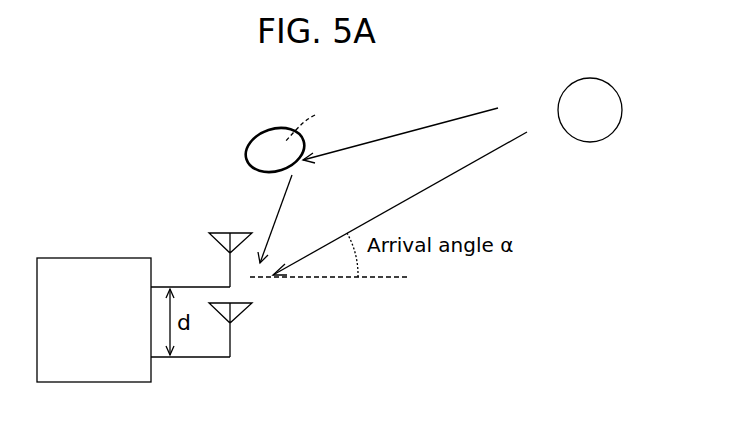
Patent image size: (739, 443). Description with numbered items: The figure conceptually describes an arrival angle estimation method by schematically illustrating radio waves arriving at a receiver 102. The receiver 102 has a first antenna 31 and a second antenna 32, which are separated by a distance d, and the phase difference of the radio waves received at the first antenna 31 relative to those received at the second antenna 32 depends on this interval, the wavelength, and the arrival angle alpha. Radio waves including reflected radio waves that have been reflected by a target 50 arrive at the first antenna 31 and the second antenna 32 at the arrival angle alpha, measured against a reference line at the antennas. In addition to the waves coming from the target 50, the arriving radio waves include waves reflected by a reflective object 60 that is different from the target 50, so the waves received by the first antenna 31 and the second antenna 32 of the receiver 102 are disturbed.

The receiver 102 is at (89, 255).
The first antenna 31 is at (200, 285).
The second antenna 32 is at (197, 358).
The reflective object 60 is at (255, 137).
The target 50 is at (605, 145).